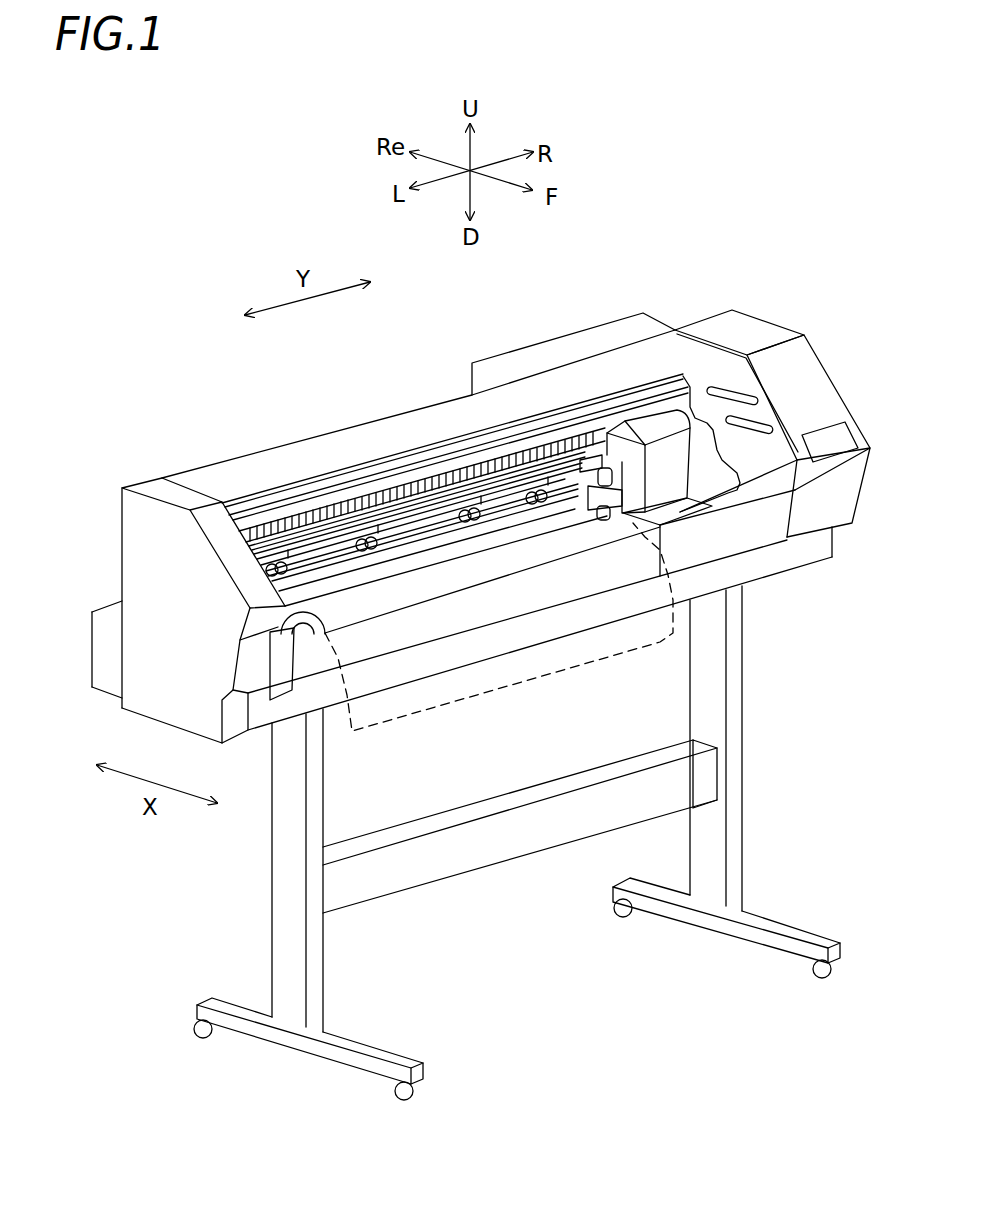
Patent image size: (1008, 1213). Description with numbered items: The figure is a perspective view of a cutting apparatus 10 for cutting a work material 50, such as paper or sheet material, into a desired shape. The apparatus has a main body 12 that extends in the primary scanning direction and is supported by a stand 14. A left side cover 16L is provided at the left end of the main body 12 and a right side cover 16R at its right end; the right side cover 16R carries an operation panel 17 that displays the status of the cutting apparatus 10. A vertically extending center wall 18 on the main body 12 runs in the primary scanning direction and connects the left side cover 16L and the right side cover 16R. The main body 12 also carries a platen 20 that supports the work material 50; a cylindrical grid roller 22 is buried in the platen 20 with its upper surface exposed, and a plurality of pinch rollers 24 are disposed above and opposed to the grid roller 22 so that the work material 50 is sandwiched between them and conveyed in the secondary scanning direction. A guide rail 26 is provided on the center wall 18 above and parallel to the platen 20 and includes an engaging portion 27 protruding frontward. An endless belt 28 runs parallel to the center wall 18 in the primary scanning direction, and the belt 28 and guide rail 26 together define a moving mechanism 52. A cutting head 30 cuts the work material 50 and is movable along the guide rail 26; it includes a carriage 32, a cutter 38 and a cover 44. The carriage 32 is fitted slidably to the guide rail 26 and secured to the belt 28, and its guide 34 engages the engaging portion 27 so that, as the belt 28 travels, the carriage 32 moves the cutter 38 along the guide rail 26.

The cutting apparatus 10 is at (168, 289).
The main body 12 is at (566, 582).
The stand 14 is at (283, 875).
The left side cover 16L is at (156, 491).
The right side cover 16R is at (746, 325).
The operation panel 17 is at (845, 440).
The center wall 18 is at (523, 432).
The platen 20 is at (520, 610).
The grid roller 22 is at (436, 580).
The pinch rollers 24 is at (468, 452).
The guide rail 26 is at (383, 518).
The engaging portion 27 is at (476, 470).
The belt 28 is at (313, 513).
The cutting head 30 is at (662, 430).
The carriage 32 is at (592, 468).
The guide 34 is at (600, 456).
The cutter 38 is at (596, 500).
The cover 44 is at (645, 427).
The work material 50 is at (572, 657).
The moving mechanism 52 is at (278, 519).